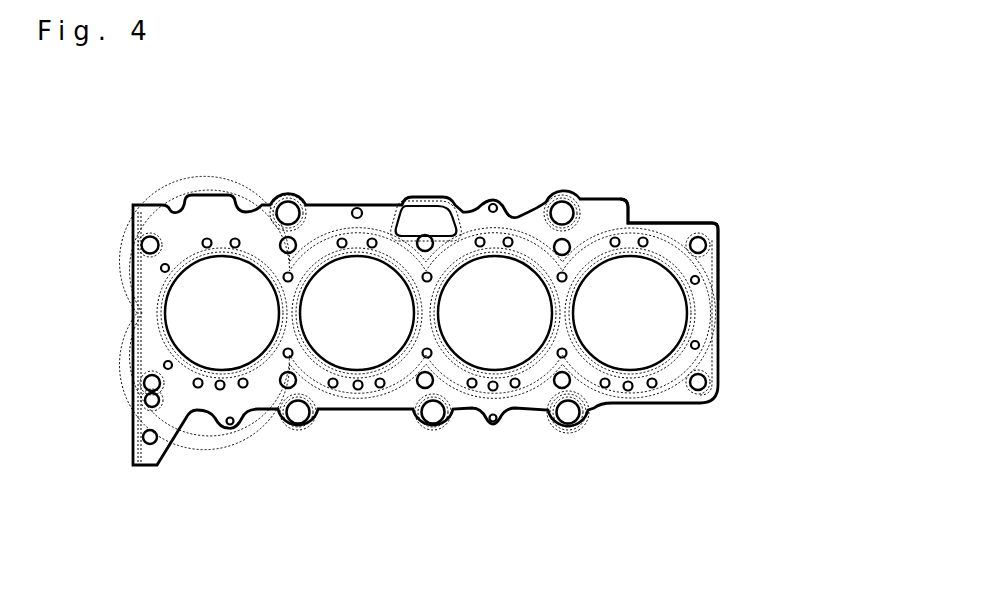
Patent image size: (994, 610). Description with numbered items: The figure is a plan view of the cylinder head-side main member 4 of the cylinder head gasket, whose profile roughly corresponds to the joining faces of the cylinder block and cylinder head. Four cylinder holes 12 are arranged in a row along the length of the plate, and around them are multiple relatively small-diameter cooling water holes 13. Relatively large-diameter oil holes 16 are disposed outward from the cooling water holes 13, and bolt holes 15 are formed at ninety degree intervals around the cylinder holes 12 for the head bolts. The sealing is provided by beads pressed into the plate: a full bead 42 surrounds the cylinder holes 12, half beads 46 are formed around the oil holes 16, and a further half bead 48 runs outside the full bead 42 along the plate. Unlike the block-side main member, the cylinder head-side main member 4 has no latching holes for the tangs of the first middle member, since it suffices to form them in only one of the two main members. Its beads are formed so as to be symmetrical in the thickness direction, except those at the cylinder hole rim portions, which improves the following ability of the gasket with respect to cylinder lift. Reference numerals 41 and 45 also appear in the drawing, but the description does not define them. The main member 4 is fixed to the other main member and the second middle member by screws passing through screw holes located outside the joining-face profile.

The cylinder head-side main member 4 is at (695, 70).
The cylinder hole 12 is at (193, 287).
The cooling water hole 13 is at (237, 240).
The bolt hole 15 is at (155, 237).
The oil hole 16 is at (292, 212).
The metal plate 41 is at (715, 222).
The full bead around cylinder holes 42 is at (700, 330).
The edge portion 45 is at (147, 237).
The half bead around oil holes 46 is at (453, 207).
The half bead 48 is at (722, 302).